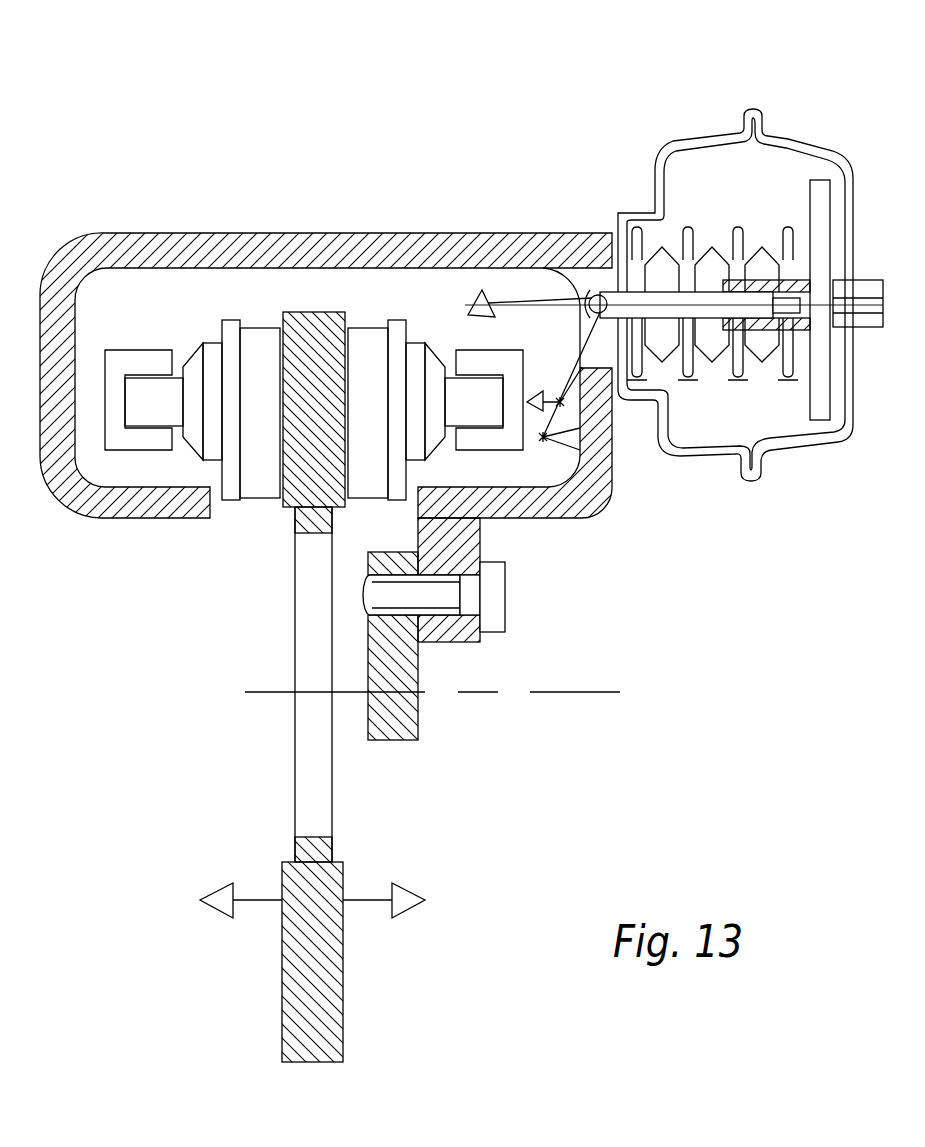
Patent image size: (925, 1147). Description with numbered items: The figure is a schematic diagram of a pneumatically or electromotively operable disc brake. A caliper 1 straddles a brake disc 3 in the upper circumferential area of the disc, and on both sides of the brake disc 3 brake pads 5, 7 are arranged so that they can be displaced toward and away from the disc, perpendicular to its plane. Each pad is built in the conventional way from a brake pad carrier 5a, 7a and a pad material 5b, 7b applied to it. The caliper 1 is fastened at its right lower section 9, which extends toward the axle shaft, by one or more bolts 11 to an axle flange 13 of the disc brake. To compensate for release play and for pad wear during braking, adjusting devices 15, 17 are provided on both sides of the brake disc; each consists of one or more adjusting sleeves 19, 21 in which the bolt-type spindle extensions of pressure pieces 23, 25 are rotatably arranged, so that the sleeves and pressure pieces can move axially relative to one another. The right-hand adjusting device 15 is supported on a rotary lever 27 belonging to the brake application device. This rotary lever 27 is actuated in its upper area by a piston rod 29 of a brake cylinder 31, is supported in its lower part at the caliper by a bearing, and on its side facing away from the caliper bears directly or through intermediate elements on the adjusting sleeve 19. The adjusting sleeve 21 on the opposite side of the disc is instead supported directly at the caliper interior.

The caliper 1 is at (360, 333).
The brake disc 3 is at (320, 957).
The brake pad 5 is at (398, 338).
The brake pad carrier 5a is at (437, 338).
The pad material 5b is at (382, 316).
The brake pad 7 is at (197, 273).
The brake pad carrier 7a is at (220, 335).
The pad material 7b is at (263, 342).
The right lower section 9 is at (457, 540).
The bolt 11 is at (493, 617).
The axle flange 13 is at (395, 727).
The adjusting device 15 is at (440, 265).
The adjusting device 17 is at (180, 338).
The adjusting sleeve 19 is at (480, 437).
The adjusting sleeve 21 is at (142, 438).
The pressure piece 23 is at (438, 410).
The pressure piece 25 is at (143, 403).
The rotary lever 27 is at (577, 368).
The piston rod 29 is at (690, 300).
The brake cylinder 31 is at (700, 143).